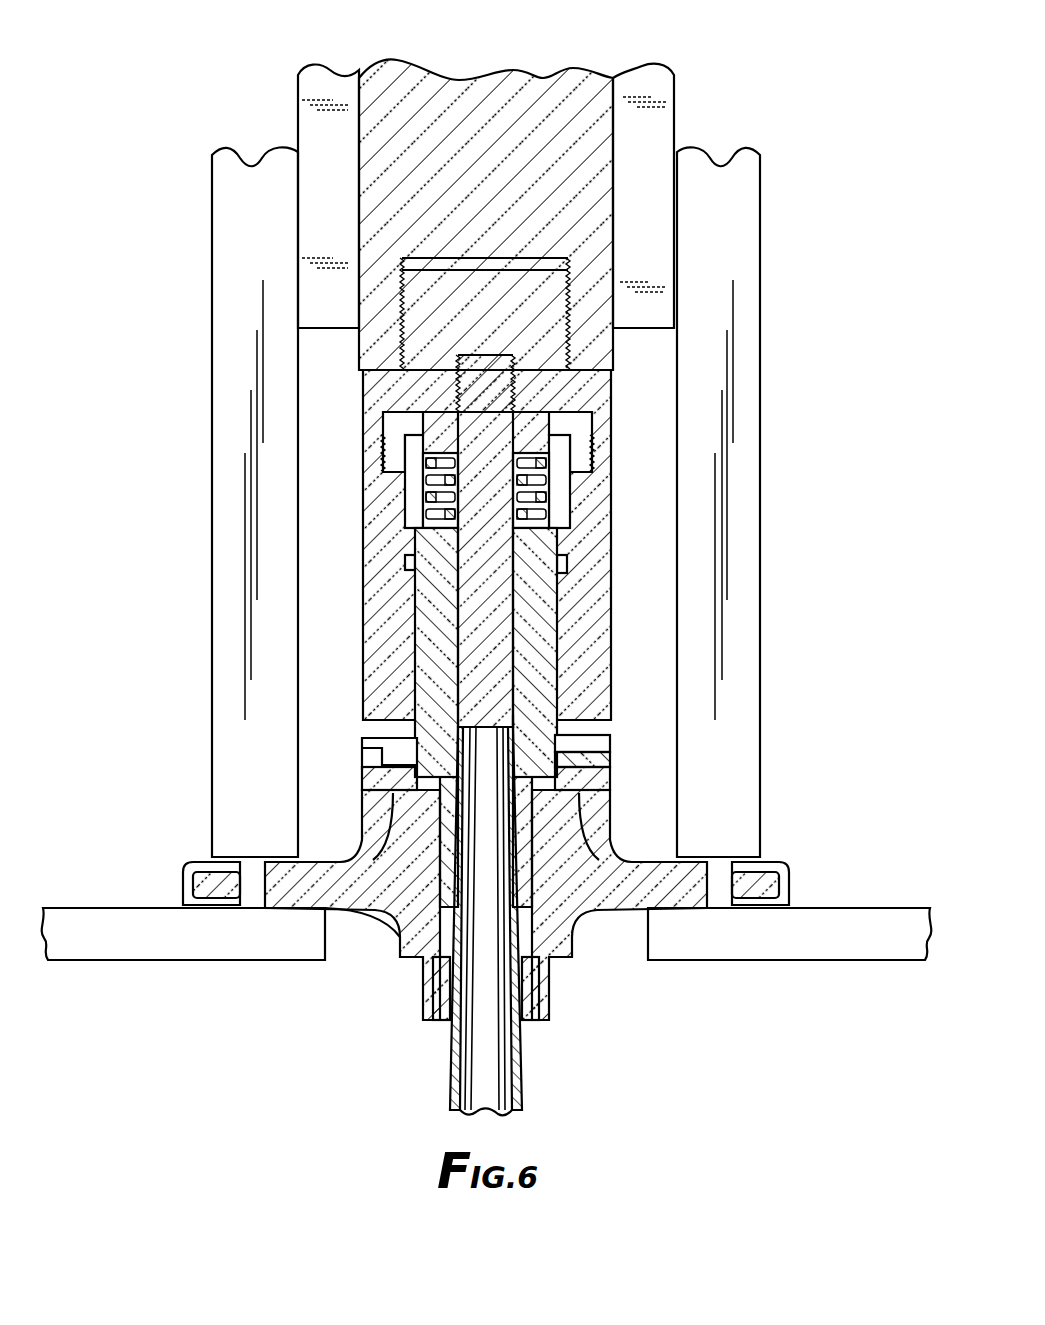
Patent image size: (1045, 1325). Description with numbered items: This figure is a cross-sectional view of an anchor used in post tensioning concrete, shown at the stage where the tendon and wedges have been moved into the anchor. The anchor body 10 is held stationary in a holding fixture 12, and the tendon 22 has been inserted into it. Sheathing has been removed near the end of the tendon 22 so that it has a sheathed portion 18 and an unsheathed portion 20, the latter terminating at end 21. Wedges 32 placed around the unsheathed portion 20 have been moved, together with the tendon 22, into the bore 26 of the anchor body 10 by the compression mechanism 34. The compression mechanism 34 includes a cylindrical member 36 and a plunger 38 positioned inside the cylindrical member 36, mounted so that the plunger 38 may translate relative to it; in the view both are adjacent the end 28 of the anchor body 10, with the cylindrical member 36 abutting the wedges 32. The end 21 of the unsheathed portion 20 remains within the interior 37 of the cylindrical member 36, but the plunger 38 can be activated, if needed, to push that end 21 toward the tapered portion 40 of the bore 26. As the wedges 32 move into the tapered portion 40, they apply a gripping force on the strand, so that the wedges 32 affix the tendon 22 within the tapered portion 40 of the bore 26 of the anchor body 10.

The anchor body 10 is at (587, 910).
The holding fixture 12 is at (212, 400).
The sheathed portion 18 is at (447, 1050).
The unsheathed portion 20 is at (507, 768).
The end of unsheathed portion 21 is at (507, 750).
The tendon 22 is at (507, 810).
The bore 26 is at (387, 795).
The end of anchor body 28 is at (373, 753).
The wedges 32 is at (403, 912).
The compression mechanism 34 is at (433, 97).
The cylindrical member 36 is at (545, 733).
The interior 37 is at (513, 730).
The plunger 38 is at (460, 677).
The tapered portion 40 is at (395, 806).